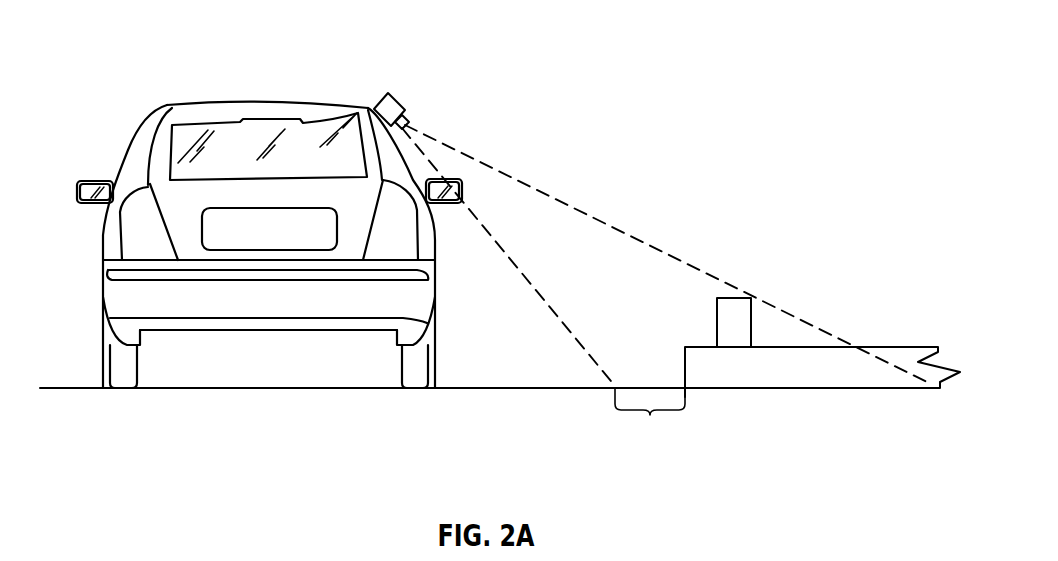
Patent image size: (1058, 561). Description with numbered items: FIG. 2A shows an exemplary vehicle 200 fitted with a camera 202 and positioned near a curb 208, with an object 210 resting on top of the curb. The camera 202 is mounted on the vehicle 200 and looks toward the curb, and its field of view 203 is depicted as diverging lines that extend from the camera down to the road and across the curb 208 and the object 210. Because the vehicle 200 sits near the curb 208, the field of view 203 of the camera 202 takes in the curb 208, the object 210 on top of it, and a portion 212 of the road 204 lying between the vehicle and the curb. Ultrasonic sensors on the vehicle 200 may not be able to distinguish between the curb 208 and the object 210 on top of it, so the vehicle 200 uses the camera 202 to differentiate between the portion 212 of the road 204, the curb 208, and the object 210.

The vehicle 200 is at (287, 102).
The camera 202 is at (399, 98).
The field of view 203 is at (576, 203).
The road 204 is at (484, 377).
The curb 208 is at (720, 364).
The object 210 is at (731, 296).
The portion of road 212 is at (650, 415).